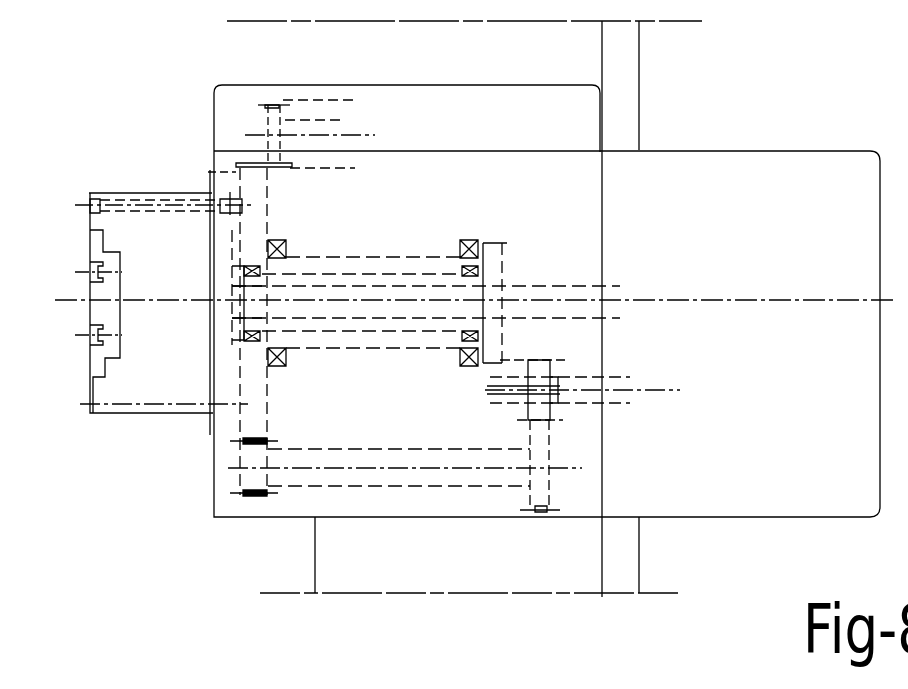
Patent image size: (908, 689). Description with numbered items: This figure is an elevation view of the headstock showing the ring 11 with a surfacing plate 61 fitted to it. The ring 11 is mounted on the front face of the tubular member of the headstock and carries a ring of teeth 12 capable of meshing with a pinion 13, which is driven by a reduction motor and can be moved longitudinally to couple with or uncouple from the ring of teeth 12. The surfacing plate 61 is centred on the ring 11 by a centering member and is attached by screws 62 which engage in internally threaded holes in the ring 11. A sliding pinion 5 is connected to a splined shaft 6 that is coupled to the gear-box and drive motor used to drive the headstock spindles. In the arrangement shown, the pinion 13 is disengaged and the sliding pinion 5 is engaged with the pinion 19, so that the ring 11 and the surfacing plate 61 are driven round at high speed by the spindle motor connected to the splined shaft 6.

The sliding pinion 5 is at (543, 359).
The splined shaft 6 is at (632, 379).
The ring 11 is at (253, 412).
The ring of teeth 12 is at (250, 165).
The pinion 13 is at (276, 104).
The pinion 19 is at (542, 514).
The surfacing plate 61 is at (155, 392).
The screws 62 is at (127, 203).